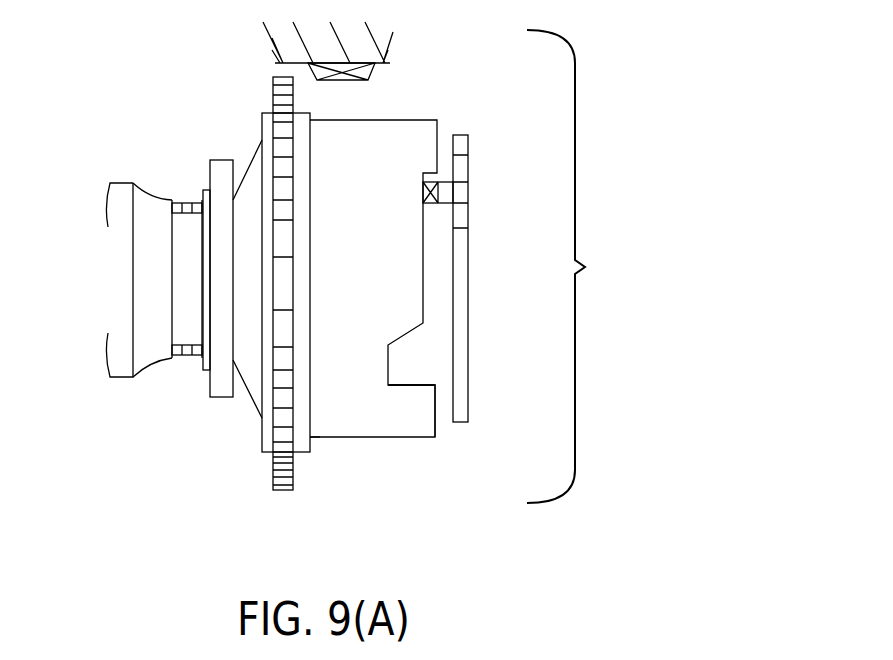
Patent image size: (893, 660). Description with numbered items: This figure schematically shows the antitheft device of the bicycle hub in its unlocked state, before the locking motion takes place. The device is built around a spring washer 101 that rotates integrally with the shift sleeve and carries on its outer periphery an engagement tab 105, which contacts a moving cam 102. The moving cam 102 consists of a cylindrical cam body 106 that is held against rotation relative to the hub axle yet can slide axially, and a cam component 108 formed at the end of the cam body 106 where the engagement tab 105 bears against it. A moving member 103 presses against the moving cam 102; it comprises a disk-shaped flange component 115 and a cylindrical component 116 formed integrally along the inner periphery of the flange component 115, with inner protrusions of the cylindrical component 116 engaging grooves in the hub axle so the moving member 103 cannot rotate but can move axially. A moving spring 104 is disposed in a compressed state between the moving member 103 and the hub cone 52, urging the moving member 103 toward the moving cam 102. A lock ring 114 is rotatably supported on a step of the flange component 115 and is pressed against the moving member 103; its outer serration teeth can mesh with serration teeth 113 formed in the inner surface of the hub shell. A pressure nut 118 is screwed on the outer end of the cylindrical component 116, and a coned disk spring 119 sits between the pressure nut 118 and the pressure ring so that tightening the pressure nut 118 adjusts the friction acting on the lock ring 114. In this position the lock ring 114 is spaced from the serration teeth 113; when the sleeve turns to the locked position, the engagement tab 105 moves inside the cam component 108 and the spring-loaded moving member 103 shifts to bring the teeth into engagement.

The hub cone 52 is at (148, 366).
The spring washer 101 is at (468, 307).
The moving cam 102 is at (385, 445).
The moving member 103 is at (312, 458).
The moving spring 104 is at (188, 205).
The engagement tab 105 is at (457, 192).
The cam body 106 is at (397, 148).
The cam component 108 is at (388, 370).
The serration teeth 113 is at (377, 78).
The lock ring 114 is at (293, 475).
The flange component 115 is at (298, 345).
The cylindrical component 116 is at (207, 372).
The pressure nut 118 is at (217, 173).
The coned disk spring 119 is at (247, 388).